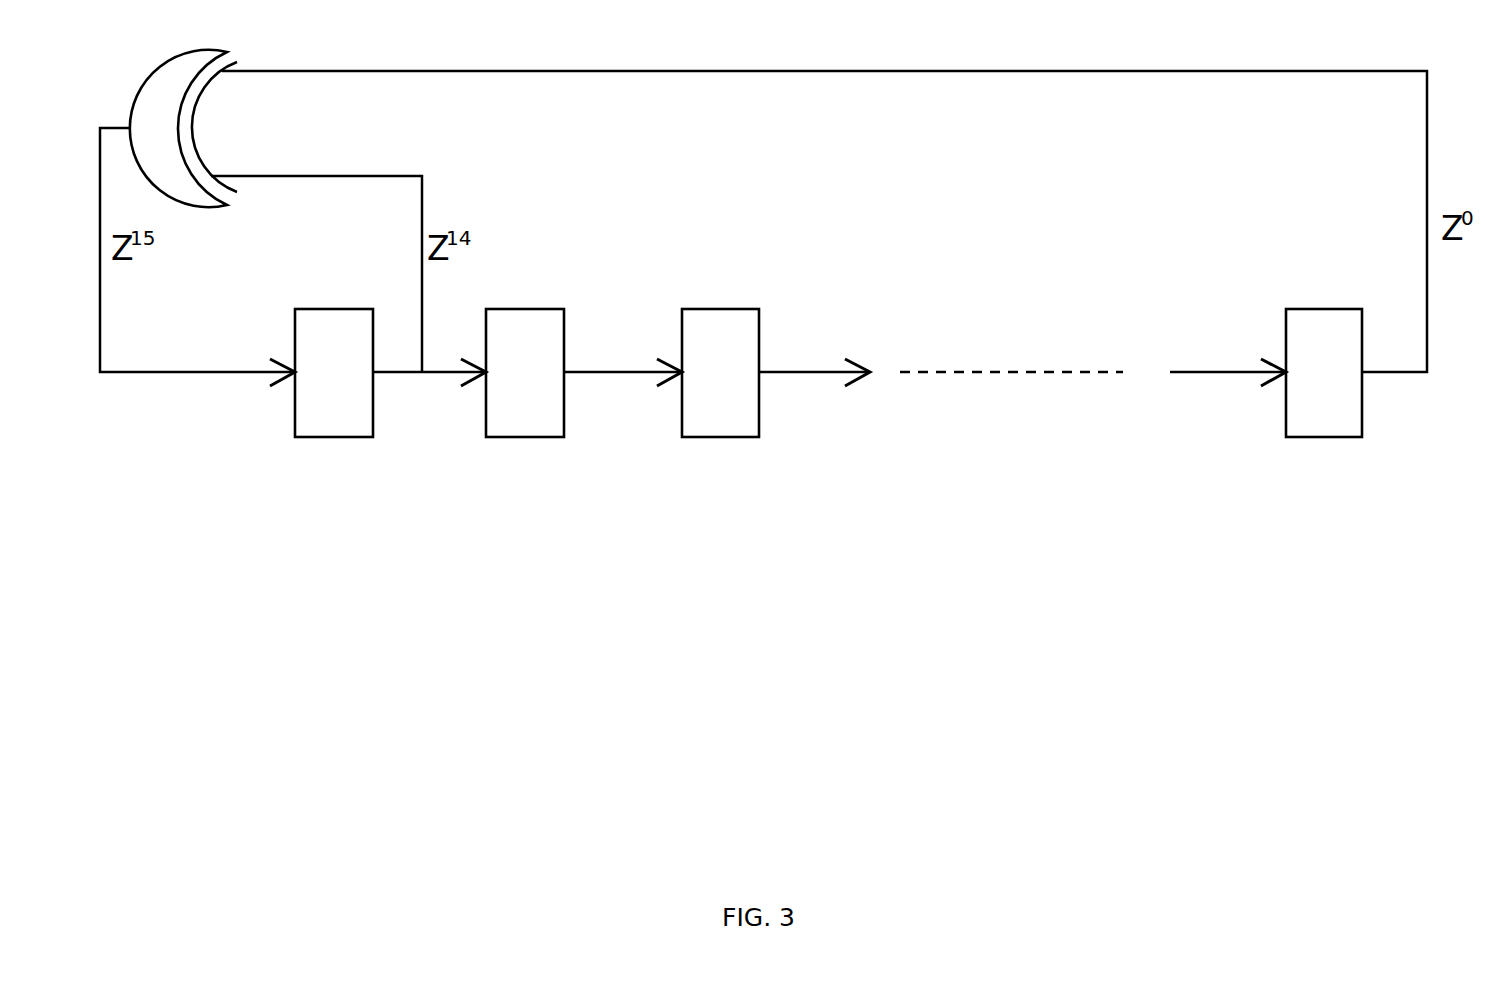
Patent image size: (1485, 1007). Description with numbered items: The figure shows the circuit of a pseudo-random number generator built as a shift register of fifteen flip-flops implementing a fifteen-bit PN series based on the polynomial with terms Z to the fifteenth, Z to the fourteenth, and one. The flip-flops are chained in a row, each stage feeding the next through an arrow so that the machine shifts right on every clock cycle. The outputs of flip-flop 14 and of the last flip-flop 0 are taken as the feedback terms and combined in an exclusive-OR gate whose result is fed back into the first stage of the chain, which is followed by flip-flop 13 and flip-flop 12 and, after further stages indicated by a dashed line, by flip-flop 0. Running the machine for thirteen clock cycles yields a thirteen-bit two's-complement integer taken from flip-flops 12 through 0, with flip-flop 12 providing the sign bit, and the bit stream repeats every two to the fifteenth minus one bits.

The flip-flop 14 is at (334, 407).
The flip-flop 13 is at (525, 407).
The flip-flop 12 is at (720, 407).
The flip-flop 0 is at (1324, 408).